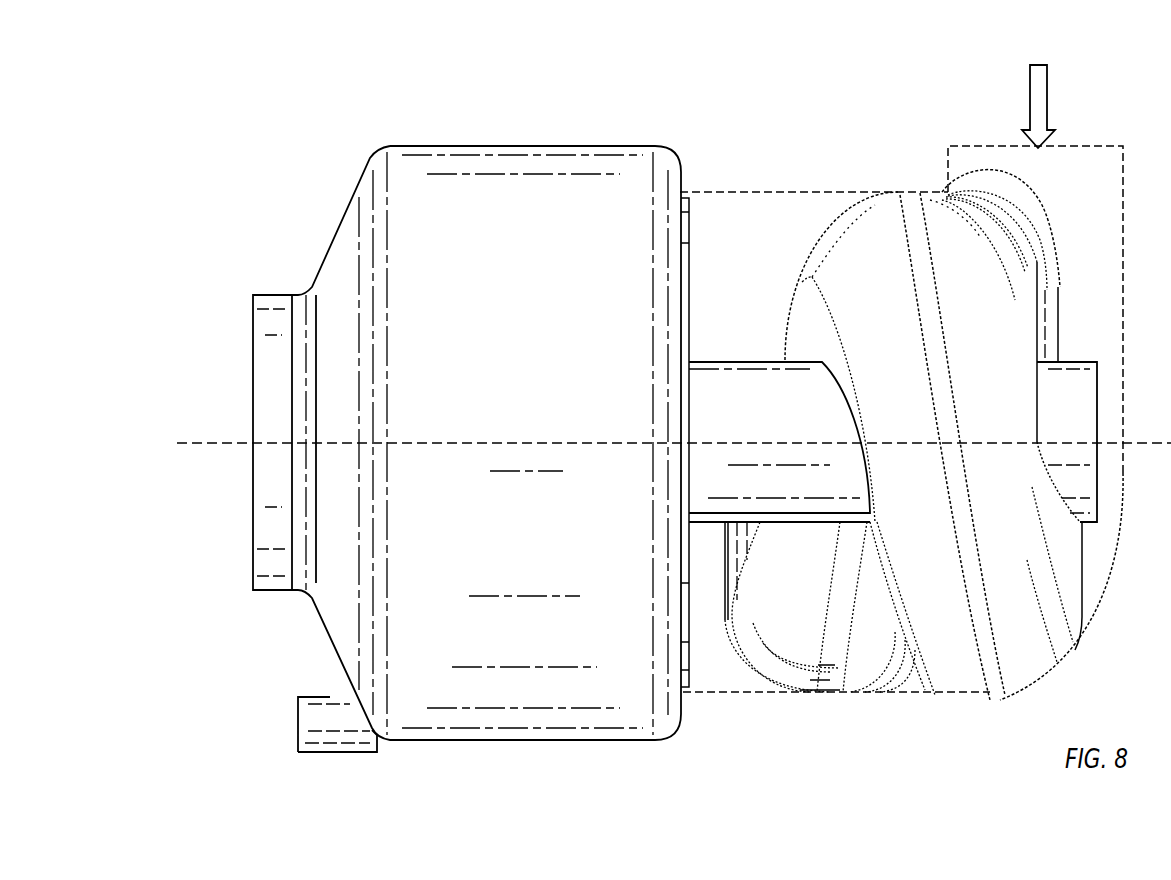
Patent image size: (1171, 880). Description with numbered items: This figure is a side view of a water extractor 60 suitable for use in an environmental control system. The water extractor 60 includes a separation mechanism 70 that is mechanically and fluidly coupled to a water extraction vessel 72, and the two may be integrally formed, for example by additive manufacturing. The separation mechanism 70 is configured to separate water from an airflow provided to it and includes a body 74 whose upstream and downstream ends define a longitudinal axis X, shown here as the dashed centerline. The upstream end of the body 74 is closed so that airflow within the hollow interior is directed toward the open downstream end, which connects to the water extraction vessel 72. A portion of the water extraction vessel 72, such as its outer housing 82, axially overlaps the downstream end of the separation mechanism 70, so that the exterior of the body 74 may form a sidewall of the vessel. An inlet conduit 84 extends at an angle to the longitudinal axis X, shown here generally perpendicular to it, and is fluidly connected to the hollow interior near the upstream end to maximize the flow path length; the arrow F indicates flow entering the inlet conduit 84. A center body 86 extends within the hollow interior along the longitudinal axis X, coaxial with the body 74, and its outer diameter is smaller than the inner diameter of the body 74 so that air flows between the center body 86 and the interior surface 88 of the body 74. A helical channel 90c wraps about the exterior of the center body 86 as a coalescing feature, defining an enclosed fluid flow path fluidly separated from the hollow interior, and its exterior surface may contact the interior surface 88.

The water extractor 60 is at (188, 140).
The water extraction vessel 72 is at (472, 102).
The outer housing 82 is at (600, 145).
The body 74 is at (767, 190).
The separation mechanism 70 is at (870, 172).
The inlet conduit 84 is at (1085, 140).
The center body 86 is at (1080, 392).
The interior surface 88 is at (723, 676).
The helical channel 90c is at (947, 600).
The force F is at (1045, 82).
The longitudinal axis X is at (665, 443).